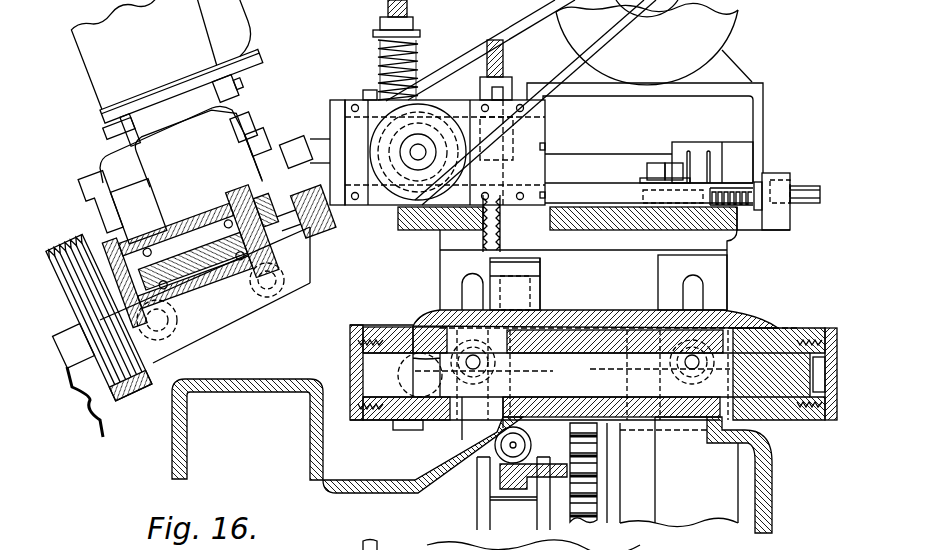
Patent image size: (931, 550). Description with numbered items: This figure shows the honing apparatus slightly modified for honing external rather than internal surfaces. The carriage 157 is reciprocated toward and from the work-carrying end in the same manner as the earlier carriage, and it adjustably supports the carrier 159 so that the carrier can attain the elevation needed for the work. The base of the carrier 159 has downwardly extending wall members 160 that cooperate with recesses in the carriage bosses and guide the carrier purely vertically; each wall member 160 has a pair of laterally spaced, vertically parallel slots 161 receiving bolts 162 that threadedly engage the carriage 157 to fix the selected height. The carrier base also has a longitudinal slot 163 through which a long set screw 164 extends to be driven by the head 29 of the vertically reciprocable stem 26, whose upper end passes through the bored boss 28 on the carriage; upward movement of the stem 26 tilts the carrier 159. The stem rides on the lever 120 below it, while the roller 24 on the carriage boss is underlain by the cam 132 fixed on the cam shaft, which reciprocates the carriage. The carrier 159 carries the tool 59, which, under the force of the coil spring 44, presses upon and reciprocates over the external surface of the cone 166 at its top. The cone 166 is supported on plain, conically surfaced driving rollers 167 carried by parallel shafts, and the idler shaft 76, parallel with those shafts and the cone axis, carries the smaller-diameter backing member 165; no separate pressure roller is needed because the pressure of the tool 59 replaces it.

The coil spring 44 is at (420, 50).
The carrier 159 is at (760, 118).
The longitudinal slot 163 is at (545, 228).
The set screw 164 is at (500, 221).
The wall members 160 is at (651, 268).
The slots 161 is at (462, 296).
The stem 26 is at (540, 297).
The bored boss 28 is at (543, 283).
The head 29 is at (520, 257).
The carriage 157 is at (761, 314).
The bolts 162 is at (594, 368).
The lever 120 is at (525, 460).
The roller 24 is at (630, 427).
The cam 132 is at (693, 517).
The backing member 165 is at (263, 150).
The cone 166 is at (277, 157).
The tool 59 is at (282, 157).
The idler shaft 76 is at (200, 223).
The driving rollers 167 is at (336, 278).